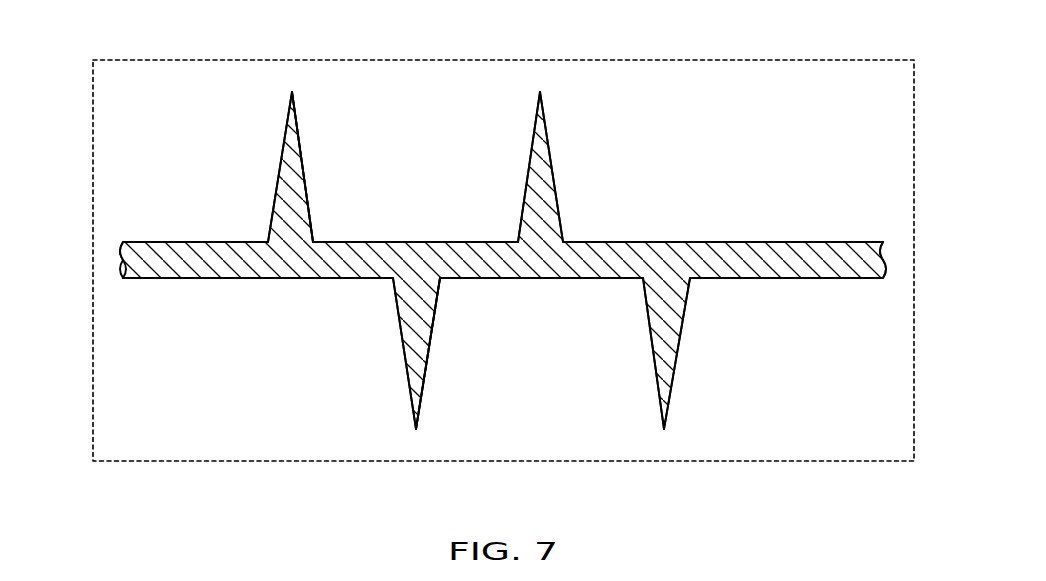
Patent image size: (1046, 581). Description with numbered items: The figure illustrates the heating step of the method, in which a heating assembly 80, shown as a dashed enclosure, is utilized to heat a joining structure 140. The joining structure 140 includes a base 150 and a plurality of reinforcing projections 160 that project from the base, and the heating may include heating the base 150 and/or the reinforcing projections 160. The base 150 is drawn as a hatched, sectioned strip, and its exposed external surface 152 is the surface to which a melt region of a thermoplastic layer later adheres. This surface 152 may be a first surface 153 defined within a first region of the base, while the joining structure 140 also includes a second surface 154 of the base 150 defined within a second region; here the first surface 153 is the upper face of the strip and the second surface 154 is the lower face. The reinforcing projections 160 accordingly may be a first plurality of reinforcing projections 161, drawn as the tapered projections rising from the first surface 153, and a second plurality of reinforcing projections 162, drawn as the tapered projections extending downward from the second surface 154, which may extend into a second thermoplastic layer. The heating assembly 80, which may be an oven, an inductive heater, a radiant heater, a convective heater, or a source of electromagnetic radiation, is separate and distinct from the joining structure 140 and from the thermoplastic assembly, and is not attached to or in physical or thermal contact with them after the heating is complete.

The heating assembly 80 is at (112, 58).
The joining structure 140 is at (108, 262).
The base 150 is at (892, 261).
The surface of base 152 is at (215, 232).
The first surface of base 153 is at (247, 240).
The second surface of base 154 is at (185, 281).
The reinforcing projections 160 is at (316, 143).
The first plurality of reinforcing projections 161 is at (309, 194).
The second plurality of reinforcing projections 162 is at (437, 320).